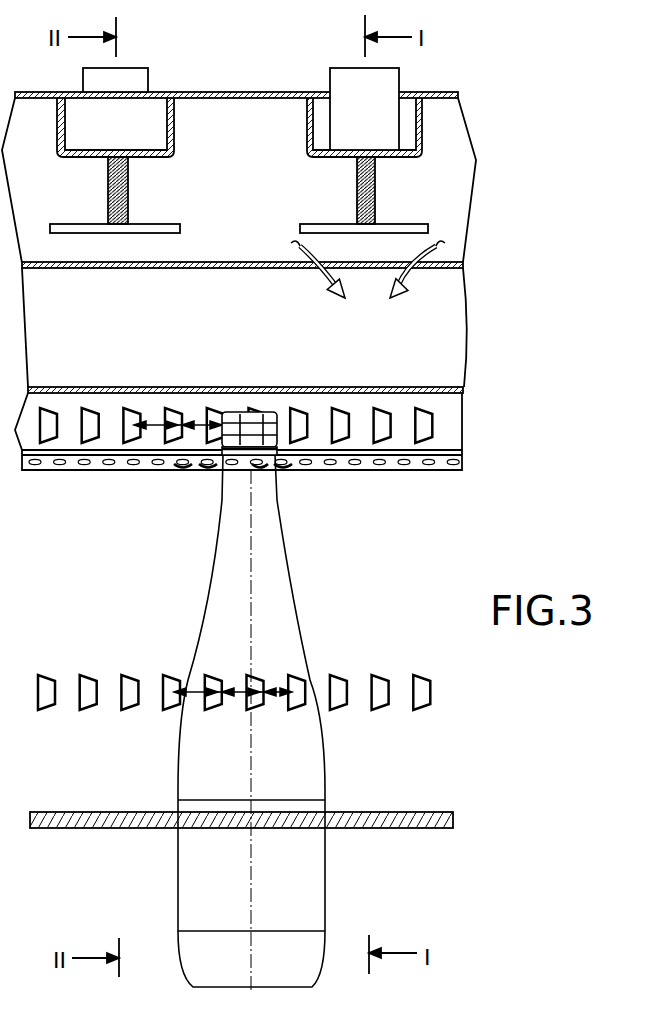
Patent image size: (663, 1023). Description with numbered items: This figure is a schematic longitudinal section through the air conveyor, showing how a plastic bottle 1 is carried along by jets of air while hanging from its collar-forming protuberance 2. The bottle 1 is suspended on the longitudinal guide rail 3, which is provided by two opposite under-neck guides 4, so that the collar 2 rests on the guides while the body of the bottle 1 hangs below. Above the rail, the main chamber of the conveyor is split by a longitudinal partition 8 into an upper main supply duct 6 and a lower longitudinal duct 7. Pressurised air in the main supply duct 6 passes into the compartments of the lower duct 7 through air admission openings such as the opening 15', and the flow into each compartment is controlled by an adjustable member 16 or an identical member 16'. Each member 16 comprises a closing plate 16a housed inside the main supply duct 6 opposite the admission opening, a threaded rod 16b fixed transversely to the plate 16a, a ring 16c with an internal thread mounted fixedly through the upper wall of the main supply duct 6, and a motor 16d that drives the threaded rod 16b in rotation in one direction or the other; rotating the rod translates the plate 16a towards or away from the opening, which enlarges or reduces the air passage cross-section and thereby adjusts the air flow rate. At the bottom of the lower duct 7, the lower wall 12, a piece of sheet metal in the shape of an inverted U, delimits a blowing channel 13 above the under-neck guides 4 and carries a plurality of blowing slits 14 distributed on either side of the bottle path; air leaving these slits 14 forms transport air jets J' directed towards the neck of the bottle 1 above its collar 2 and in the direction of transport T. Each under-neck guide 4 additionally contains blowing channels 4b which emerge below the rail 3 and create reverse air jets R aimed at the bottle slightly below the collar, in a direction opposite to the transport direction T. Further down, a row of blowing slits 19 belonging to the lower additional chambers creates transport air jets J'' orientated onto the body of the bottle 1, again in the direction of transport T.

The plastic bottles 1 is at (288, 623).
The collar-forming protuberance 2 is at (285, 452).
The longitudinal guide rail 3 is at (452, 445).
The under-neck guides 4 is at (242, 482).
The blowing channels 4b is at (358, 468).
The main supply duct 6 is at (533, 90).
The lower longitudinal duct 7 is at (533, 270).
The longitudinal partition 8 is at (120, 268).
The lower wall 12 is at (430, 396).
The blowing channel 13 is at (450, 419).
The blowing slits 14 is at (425, 432).
The air admission opening 15' is at (368, 285).
The member 16 is at (141, 142).
The member 16' is at (411, 150).
The closing plate 16a is at (170, 233).
The threaded rod 16b is at (128, 178).
The ring 16c is at (103, 160).
The motor 16d is at (133, 77).
The blowing slits 19 is at (302, 705).
The reverse air jets R is at (205, 465).
The direction of transport T is at (115, 580).
The transport air jets J' is at (199, 389).
The transport air jets J'' is at (233, 722).